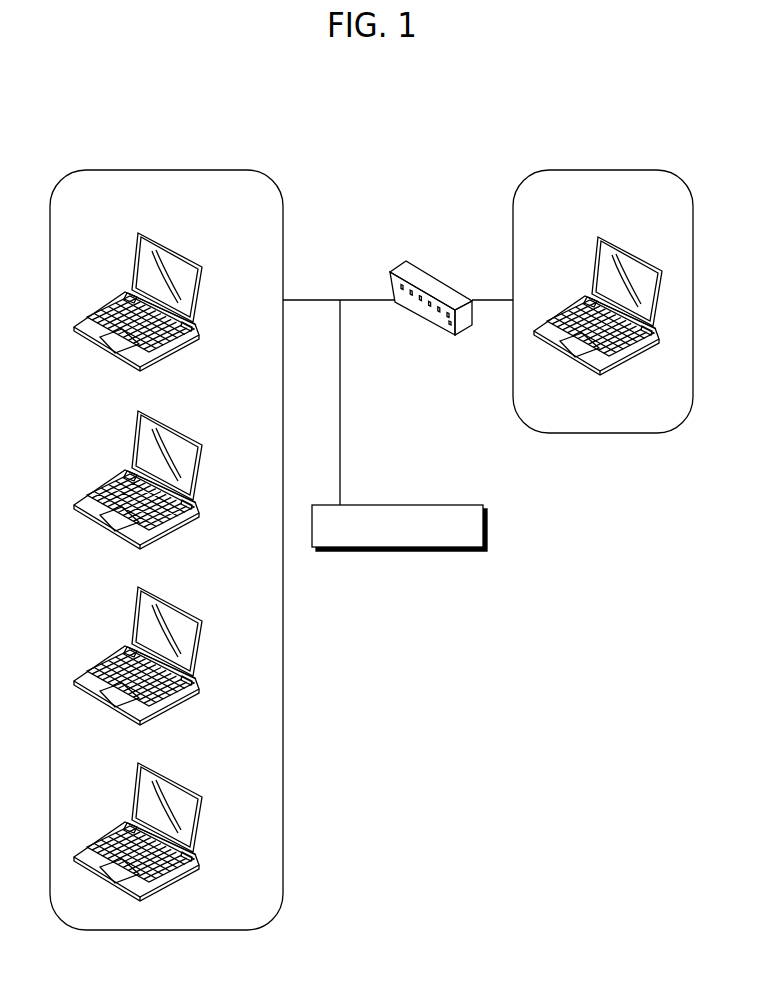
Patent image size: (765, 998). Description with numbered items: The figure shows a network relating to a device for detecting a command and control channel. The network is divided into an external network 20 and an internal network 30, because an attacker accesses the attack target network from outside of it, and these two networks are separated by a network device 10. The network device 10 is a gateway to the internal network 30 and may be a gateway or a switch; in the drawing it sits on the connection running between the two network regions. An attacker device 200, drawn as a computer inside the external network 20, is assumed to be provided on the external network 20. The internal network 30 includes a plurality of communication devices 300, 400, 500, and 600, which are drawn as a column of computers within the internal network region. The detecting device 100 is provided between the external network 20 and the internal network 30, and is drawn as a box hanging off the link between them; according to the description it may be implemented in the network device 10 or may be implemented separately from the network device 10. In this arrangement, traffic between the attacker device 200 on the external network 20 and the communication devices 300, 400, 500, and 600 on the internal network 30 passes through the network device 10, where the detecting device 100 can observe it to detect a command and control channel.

The network device 10 is at (420, 268).
The external network 20 is at (578, 170).
The internal network 30 is at (216, 170).
The detecting device 100 is at (425, 552).
The attacker device 200 is at (607, 367).
The communication device 300 is at (197, 305).
The communication device 400 is at (197, 483).
The communication device 500 is at (197, 660).
The communication device 600 is at (197, 835).